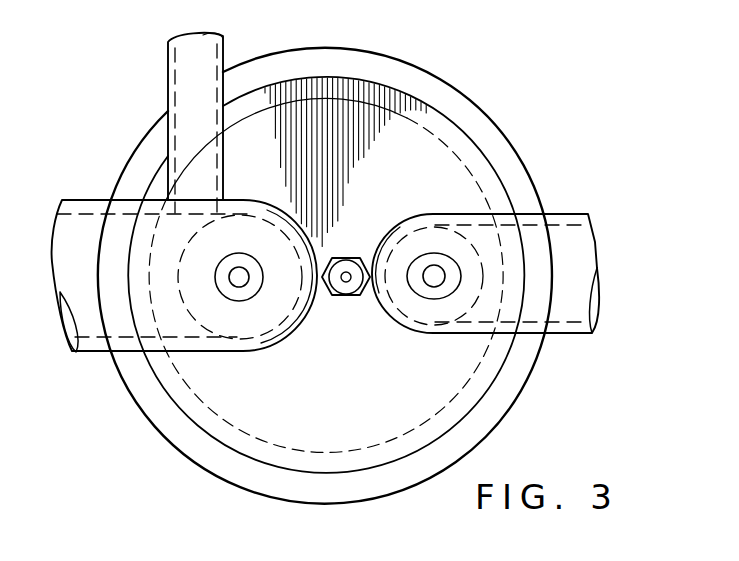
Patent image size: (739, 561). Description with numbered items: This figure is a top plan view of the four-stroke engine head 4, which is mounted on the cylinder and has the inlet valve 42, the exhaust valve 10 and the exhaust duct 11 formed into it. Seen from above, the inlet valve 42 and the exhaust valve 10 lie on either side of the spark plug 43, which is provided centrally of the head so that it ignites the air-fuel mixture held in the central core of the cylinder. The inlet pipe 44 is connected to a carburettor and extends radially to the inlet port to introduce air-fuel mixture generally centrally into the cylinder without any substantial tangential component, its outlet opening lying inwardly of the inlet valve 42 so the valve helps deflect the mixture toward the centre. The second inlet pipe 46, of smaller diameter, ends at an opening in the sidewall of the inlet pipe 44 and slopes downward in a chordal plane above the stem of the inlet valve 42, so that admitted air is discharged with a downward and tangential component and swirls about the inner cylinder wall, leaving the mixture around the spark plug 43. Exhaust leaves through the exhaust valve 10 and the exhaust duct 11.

The head 4 is at (505, 165).
The exhaust valve 10 is at (434, 280).
The exhaust duct 11 is at (563, 310).
The inlet valve 42 is at (243, 280).
The spark plug 43 is at (347, 290).
The inlet pipe 44 is at (95, 233).
The second inlet pipe 46 is at (188, 79).